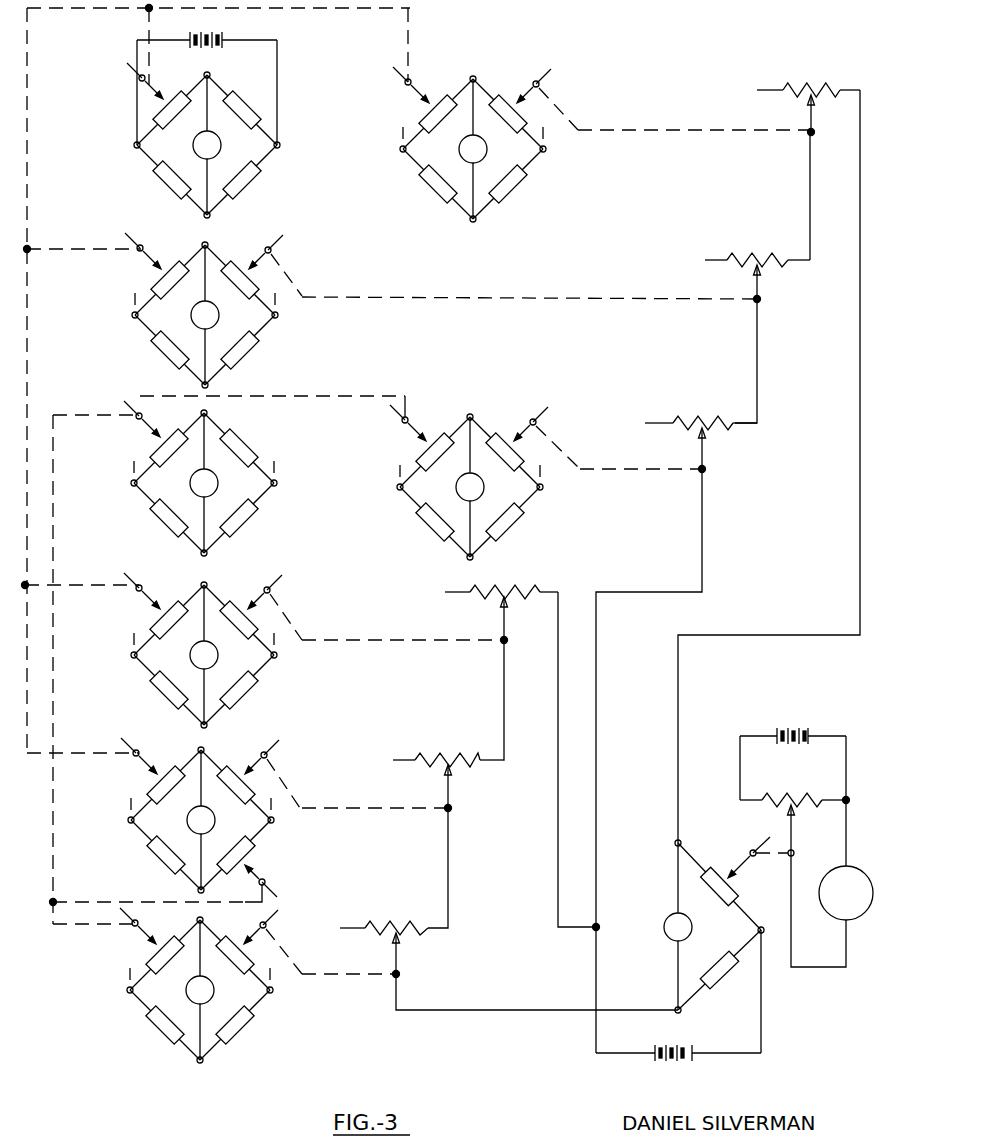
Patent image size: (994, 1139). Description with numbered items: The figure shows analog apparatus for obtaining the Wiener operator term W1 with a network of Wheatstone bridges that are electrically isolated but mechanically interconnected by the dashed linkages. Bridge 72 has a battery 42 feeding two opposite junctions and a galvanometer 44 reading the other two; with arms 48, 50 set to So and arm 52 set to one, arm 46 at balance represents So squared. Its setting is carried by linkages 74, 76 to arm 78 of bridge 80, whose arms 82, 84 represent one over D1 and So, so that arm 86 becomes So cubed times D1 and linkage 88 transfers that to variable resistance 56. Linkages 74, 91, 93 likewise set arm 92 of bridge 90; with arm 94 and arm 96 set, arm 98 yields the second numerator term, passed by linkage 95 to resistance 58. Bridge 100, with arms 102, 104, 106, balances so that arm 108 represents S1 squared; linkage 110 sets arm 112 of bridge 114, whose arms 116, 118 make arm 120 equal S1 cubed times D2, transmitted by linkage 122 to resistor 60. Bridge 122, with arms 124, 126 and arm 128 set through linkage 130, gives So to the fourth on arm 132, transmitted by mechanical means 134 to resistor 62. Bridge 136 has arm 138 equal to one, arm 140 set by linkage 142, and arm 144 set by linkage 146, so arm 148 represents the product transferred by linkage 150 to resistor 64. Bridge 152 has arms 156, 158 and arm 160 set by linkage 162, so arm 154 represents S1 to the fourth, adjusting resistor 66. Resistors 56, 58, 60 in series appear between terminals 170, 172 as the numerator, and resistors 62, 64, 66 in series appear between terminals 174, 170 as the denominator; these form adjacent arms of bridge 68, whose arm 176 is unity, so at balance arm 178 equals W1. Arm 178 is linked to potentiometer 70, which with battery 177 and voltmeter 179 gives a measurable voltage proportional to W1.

The battery 42 is at (207, 81).
The galvanometer 44 is at (247, 150).
The resistance arm 46 is at (137, 109).
The resistance arm 48 is at (260, 109).
The resistance arm 50 is at (134, 180).
The resistance arm 52 is at (257, 180).
The variable resistance 56 is at (818, 100).
The variable resistance 58 is at (769, 267).
The variable resistance 60 is at (720, 428).
The variable resistance 62 is at (511, 600).
The variable resistance 64 is at (486, 766).
The variable resistance 66 is at (410, 934).
The Wheatstone bridge 68 is at (671, 927).
The potentiometer 70 is at (808, 796).
The Wheatstone bridge 72 is at (188, 113).
The mechanical linkage 74 is at (155, 53).
The mechanical linkage 76 is at (374, 14).
The bridge arm 78 is at (409, 100).
The Wheatstone bridge 80 is at (481, 127).
The bridge arm 82 is at (419, 185).
The bridge arm 84 is at (520, 185).
The bridge arm 86 is at (545, 114).
The mechanical linkage 88 is at (677, 130).
The Wheatstone bridge 90 is at (185, 306).
The mechanical linkage 91 is at (28, 96).
The bridge arm 92 is at (138, 266).
The mechanical linkage 93 is at (78, 249).
The bridge arm 94 is at (148, 351).
The mechanical linkage 95 is at (456, 298).
The bridge arm 96 is at (251, 351).
The bridge arm 98 is at (260, 262).
The Wheatstone bridge 100 is at (189, 478).
The bridge arm 102 is at (147, 519).
The bridge arm 104 is at (260, 519).
The bridge arm 106 is at (261, 442).
The bridge arm 108 is at (136, 434).
The mechanical linkage 110 is at (363, 396).
The bridge arm 112 is at (404, 438).
The Wheatstone bridge 114 is at (475, 467).
The bridge arm 116 is at (415, 522).
The bridge arm 118 is at (526, 522).
The bridge arm 120 is at (541, 449).
The Wheatstone bridge / mechanical linkage 122 is at (657, 469).
The bridge arm 124 is at (138, 690).
The bridge arm 126 is at (261, 690).
The bridge arm 128 is at (126, 606).
The mechanical linkage 130 is at (105, 585).
The bridge arm 132 is at (261, 601).
The mechanical means 134 is at (365, 640).
The Wheatstone bridge 136 is at (186, 812).
The bridge arm 138 is at (137, 855).
The bridge arm 140 is at (132, 771).
The mechanical linkage 142 is at (107, 753).
The bridge arm 144 is at (260, 866).
The mechanical linkage 146 is at (120, 902).
The bridge arm 148 is at (258, 767).
The mechanical linkage 150 is at (375, 808).
The Wheatstone bridge 152 is at (230, 985).
The bridge arm 154 is at (272, 952).
The bridge arm / linkage 156 is at (245, 998).
The bridge arm 158 is at (258, 1029).
The bridge arm 160 is at (135, 941).
The mechanical linkage 162 is at (124, 927).
The terminal 170 is at (600, 926).
The terminal 172 is at (677, 800).
The terminal 174 is at (641, 1026).
The bridge arm 176 is at (723, 983).
The battery 177 is at (796, 728).
The resistance arm 178 is at (747, 860).
The voltmeter 179 is at (850, 922).